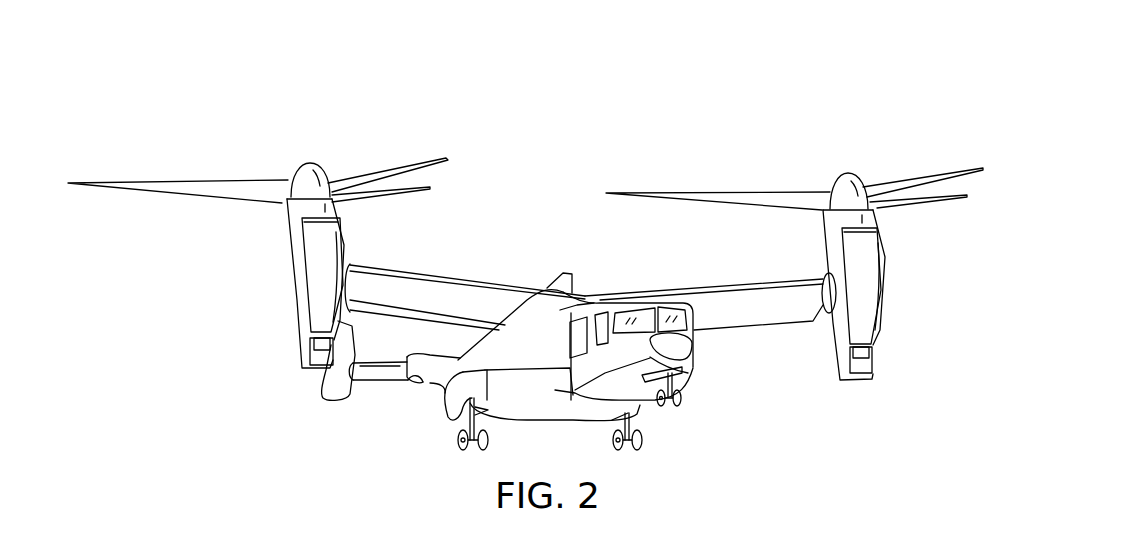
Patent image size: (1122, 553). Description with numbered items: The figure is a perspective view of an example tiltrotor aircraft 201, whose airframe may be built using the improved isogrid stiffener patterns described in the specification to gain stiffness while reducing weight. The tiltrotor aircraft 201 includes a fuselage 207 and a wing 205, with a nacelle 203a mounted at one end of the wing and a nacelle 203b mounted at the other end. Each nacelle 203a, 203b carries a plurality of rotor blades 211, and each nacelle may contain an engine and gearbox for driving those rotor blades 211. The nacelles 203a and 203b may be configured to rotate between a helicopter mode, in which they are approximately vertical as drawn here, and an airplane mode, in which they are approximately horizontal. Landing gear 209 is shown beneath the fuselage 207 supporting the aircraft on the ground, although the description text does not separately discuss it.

The tiltrotor aircraft 201 is at (316, 97).
The nacelle 203a is at (261, 278).
The nacelle 203b is at (896, 291).
The wing 205 is at (463, 274).
The fuselage 207 is at (697, 357).
The landing gear 209 is at (458, 438).
The rotor blades 211 is at (407, 163).